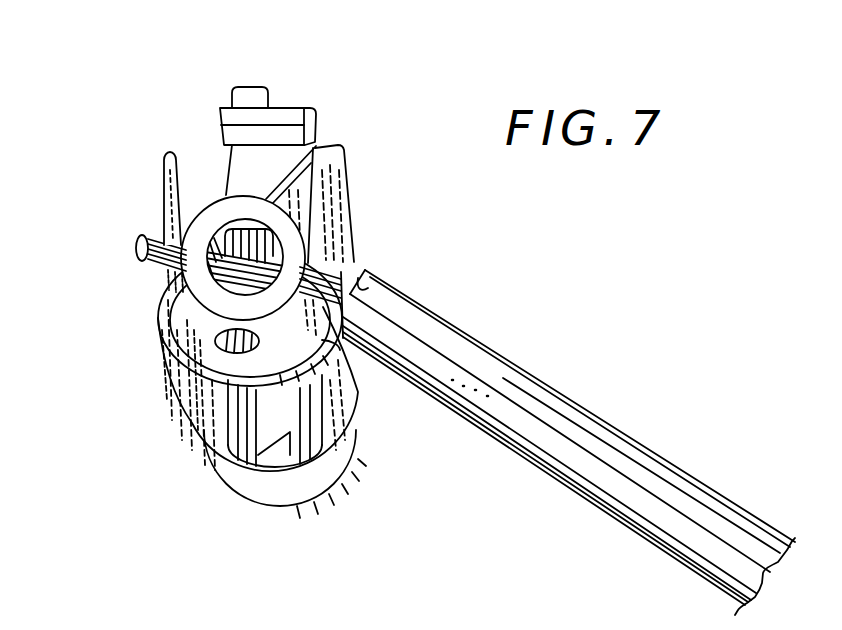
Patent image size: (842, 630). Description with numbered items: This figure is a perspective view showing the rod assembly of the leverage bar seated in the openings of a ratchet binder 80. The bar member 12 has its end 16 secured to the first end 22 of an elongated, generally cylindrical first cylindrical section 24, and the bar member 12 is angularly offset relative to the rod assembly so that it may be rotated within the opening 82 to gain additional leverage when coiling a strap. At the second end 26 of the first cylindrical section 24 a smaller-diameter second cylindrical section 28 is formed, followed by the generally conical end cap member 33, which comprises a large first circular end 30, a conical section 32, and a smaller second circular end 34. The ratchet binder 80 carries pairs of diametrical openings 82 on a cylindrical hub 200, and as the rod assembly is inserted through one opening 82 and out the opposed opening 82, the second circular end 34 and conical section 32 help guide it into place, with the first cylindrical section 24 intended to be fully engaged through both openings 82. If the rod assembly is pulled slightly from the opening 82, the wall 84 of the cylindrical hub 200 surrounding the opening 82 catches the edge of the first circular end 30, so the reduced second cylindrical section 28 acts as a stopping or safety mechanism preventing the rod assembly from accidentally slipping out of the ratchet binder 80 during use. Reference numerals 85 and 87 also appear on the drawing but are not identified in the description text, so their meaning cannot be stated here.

The bar member 12 is at (567, 418).
The end of the bar 16 is at (376, 300).
The first end 22 is at (372, 273).
The first cylindrical section 24 is at (358, 270).
The second end 26 is at (182, 237).
The second cylindrical section 28 is at (150, 240).
The first circular end 30 is at (148, 240).
The conical section 32 is at (137, 243).
The end cap member 33 is at (140, 240).
The second circular end 34 is at (137, 246).
The ratchet binder 80 is at (331, 131).
The opening 82 is at (215, 342).
The wall 84 is at (187, 300).
The inner cylinder 85 is at (287, 433).
The housing wall 87 is at (173, 367).
The cylindrical hub 200 is at (318, 352).